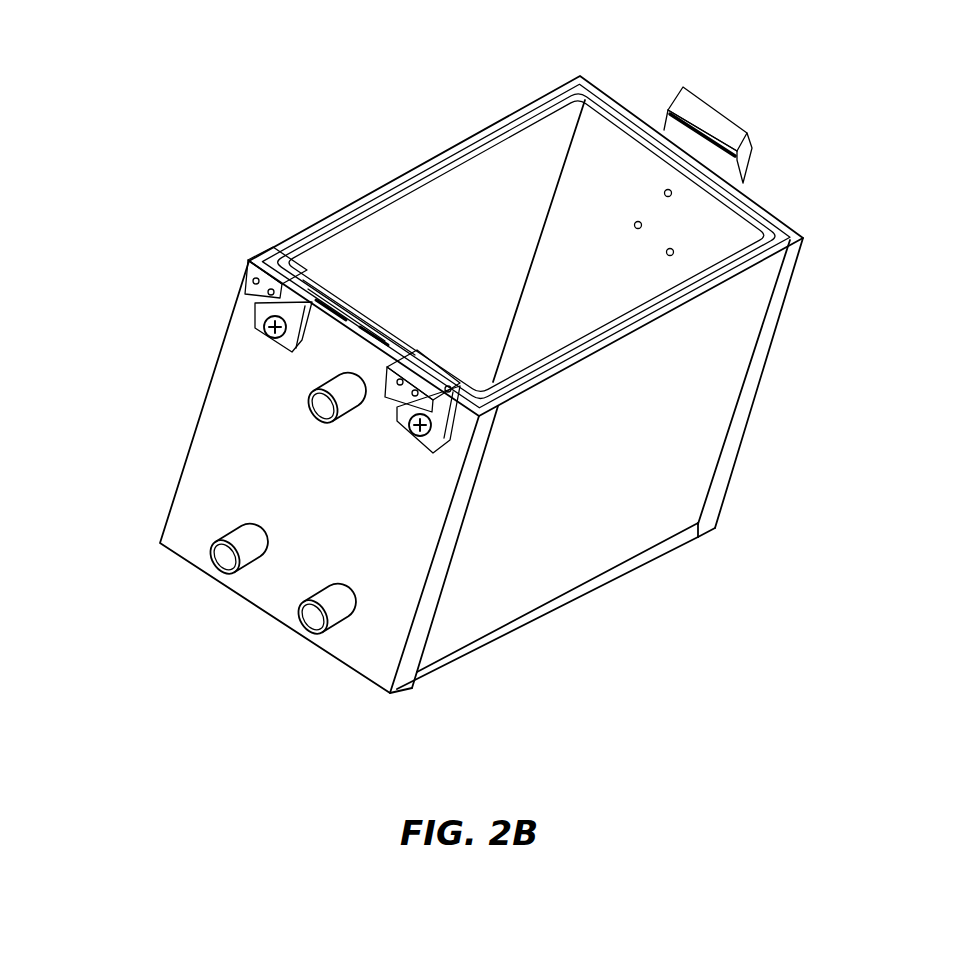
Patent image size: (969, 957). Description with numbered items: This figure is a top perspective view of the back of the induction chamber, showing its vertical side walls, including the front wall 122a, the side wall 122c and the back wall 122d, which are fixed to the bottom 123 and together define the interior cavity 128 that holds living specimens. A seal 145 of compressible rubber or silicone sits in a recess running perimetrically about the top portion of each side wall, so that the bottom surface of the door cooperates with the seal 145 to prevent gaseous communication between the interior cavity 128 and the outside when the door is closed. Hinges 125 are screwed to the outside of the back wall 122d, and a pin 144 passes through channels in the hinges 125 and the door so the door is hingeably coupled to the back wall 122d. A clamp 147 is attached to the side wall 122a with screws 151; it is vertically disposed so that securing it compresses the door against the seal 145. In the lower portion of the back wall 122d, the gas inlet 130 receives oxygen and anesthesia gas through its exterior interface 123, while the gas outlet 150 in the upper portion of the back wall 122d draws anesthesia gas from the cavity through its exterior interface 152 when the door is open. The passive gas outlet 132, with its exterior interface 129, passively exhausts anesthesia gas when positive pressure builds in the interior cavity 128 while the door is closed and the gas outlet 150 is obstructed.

The front wall 122a is at (762, 363).
The side wall 122c is at (670, 490).
The back wall 122d is at (411, 210).
The exterior interface 123 is at (445, 378).
The hinges 125 is at (268, 260).
The interior cavity 128 is at (495, 295).
The exterior interface 129 is at (225, 672).
The gas inlet 130 is at (222, 554).
The passive gas outlet 132 is at (315, 620).
The pin 144 is at (202, 263).
The seal 145 is at (792, 223).
The clamp 147 is at (712, 118).
The gas outlet 150 is at (325, 402).
The screws 151 is at (638, 220).
The exterior interface 152 is at (350, 393).